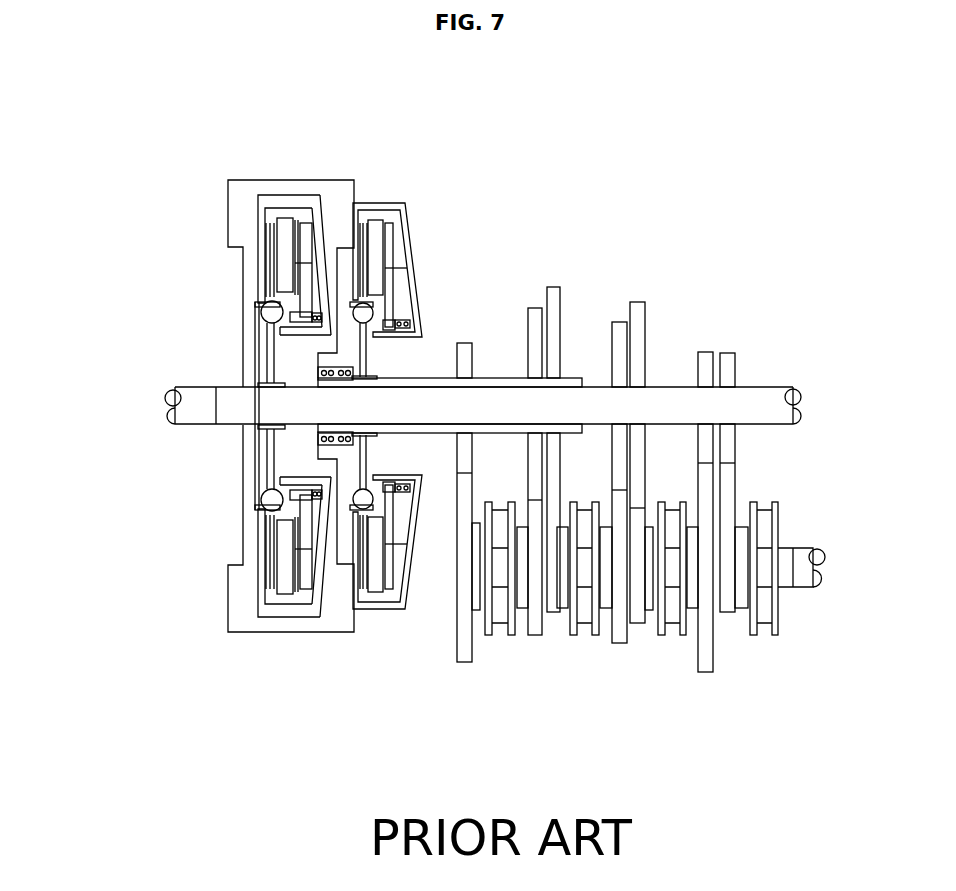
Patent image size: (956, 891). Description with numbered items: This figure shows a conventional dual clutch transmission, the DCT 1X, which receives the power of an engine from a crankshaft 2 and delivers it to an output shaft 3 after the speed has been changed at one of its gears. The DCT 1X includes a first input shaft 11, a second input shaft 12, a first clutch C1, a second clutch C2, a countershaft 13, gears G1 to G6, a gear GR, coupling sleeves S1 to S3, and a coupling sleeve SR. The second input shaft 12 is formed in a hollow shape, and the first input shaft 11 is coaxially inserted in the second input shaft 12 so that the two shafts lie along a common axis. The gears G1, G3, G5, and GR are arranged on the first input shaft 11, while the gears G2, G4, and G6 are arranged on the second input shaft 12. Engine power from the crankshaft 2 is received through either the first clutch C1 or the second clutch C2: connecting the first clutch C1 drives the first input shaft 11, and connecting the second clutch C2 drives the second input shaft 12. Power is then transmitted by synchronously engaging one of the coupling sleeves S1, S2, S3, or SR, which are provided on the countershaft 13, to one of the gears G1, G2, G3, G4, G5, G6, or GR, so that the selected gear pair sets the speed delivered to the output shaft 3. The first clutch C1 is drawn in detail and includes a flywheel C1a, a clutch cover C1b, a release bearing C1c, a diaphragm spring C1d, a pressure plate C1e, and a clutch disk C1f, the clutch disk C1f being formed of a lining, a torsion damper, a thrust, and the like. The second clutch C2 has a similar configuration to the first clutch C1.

The DCT 1X is at (742, 214).
The crankshaft 2 is at (197, 405).
The output shaft 3 is at (810, 578).
The first input shaft 11 is at (770, 397).
The second input shaft 12 is at (503, 378).
The countershaft 13 is at (478, 572).
The first clutch C1 is at (287, 217).
The flywheel C1a is at (245, 212).
The clutch cover C1b is at (320, 240).
The release bearing C1c is at (290, 327).
The diaphragm spring C1d is at (261, 310).
The pressure plate C1e is at (287, 250).
The clutch disk C1f is at (270, 270).
The second clutch C2 is at (420, 185).
The gear G1 is at (705, 352).
The gear G2 is at (463, 343).
The gear G3 is at (618, 322).
The gear G4 is at (533, 308).
The gear G5 is at (637, 302).
The gear G6 is at (553, 287).
The gear GR is at (727, 353).
The coupling sleeve S1 is at (670, 585).
The coupling sleeve S2 is at (498, 582).
The coupling sleeve S3 is at (583, 582).
The coupling sleeve SR is at (762, 588).